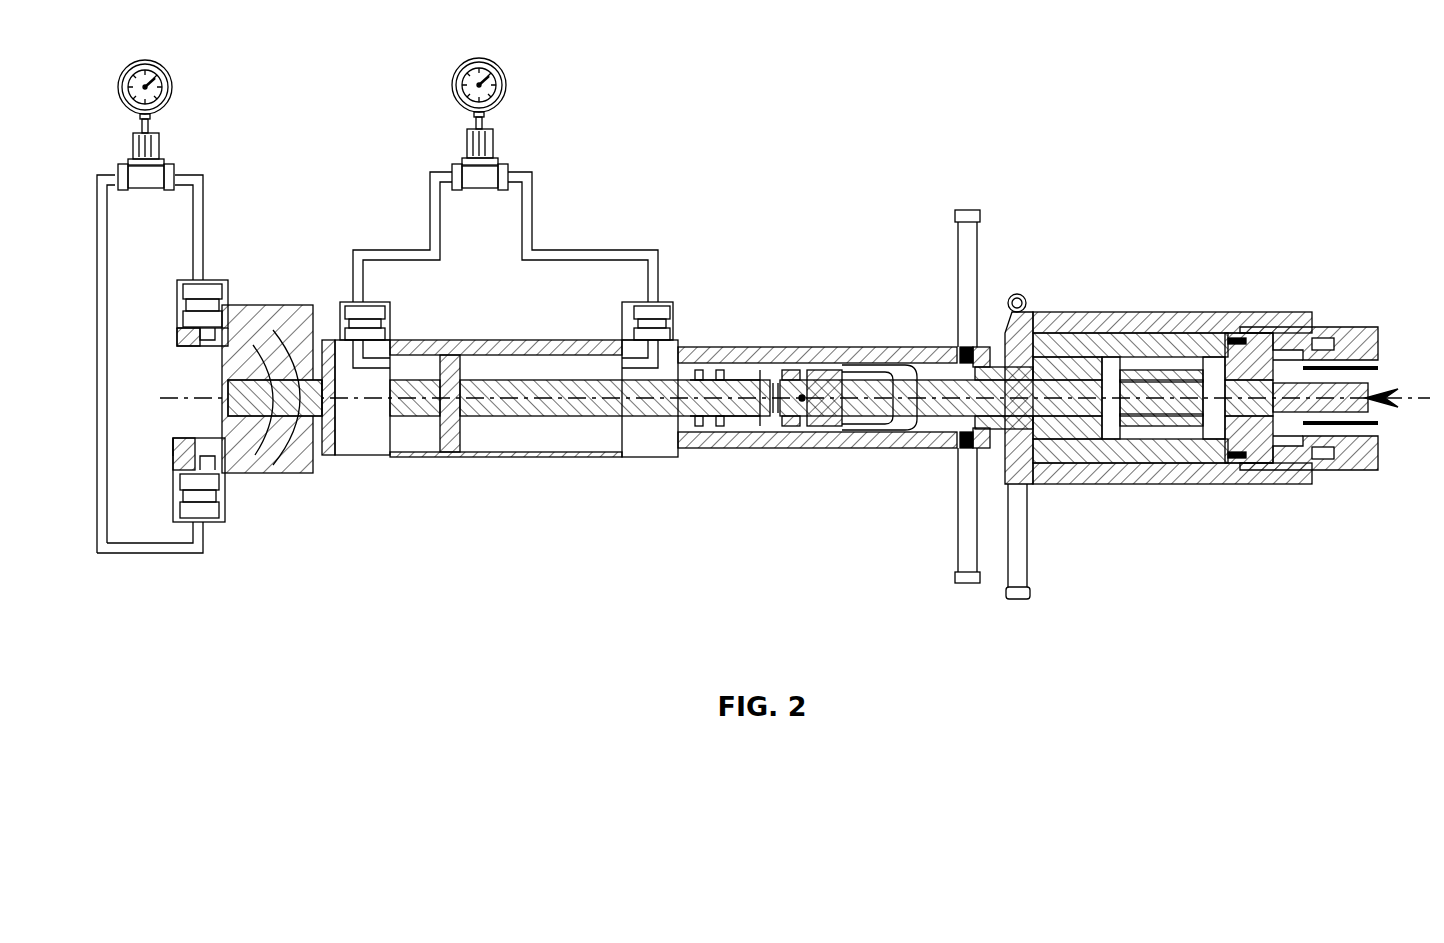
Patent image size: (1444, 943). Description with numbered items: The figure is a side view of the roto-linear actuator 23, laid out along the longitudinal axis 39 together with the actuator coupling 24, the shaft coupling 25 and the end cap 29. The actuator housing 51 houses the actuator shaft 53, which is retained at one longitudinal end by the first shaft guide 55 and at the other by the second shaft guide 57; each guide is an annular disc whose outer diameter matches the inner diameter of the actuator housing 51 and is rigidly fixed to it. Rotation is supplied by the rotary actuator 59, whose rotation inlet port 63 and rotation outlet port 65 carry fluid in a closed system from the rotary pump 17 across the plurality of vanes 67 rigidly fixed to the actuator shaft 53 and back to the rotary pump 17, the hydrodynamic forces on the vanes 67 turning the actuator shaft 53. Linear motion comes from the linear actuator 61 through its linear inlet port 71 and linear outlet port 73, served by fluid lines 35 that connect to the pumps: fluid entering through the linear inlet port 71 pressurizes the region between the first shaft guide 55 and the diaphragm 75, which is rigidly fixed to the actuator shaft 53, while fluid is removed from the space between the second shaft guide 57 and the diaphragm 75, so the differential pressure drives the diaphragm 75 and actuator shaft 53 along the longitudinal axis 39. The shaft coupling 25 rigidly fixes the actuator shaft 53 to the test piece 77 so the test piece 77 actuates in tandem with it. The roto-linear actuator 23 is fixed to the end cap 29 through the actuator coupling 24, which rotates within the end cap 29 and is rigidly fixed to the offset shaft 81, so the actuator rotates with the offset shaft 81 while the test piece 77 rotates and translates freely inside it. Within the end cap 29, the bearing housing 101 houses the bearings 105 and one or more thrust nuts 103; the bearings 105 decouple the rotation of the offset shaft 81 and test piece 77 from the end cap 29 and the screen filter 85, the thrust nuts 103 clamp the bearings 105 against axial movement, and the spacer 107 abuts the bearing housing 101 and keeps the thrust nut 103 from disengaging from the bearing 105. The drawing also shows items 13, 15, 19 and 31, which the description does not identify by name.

The pressure relief valve 13 is at (497, 146).
The pressure gauge 15 is at (506, 80).
The rotary pump 17 is at (128, 170).
The pressure gauge 19 is at (172, 84).
The roto-linear actuator 23 is at (372, 582).
The actuator coupling 24 is at (893, 350).
The shaft coupling 25 is at (774, 434).
The end cap 29 is at (1078, 314).
The tie rod 31 is at (966, 586).
The fluid lines 35 is at (612, 250).
The longitudinal axis 39 is at (1396, 392).
The actuator housing 51 is at (430, 338).
The actuator shaft 53 is at (518, 412).
The first shaft guide 55 is at (362, 445).
The second shaft guide 57 is at (652, 460).
The rotary actuator 59 is at (188, 582).
The linear actuator 61 is at (672, 203).
The rotation inlet port 63 is at (200, 288).
The rotation outlet port 65 is at (196, 524).
The vanes 67 is at (286, 476).
The linear inlet port 71 is at (662, 302).
The linear outlet port 73 is at (828, 370).
The diaphragm 75 is at (452, 458).
The test piece 77 is at (892, 428).
The offset shaft 81 is at (1196, 360).
The screen filter 85 is at (1370, 362).
The bearing housing 101 is at (1232, 465).
The thrust nuts 103 is at (1062, 484).
The bearings 105 is at (1112, 448).
The spacer 107 is at (1015, 294).